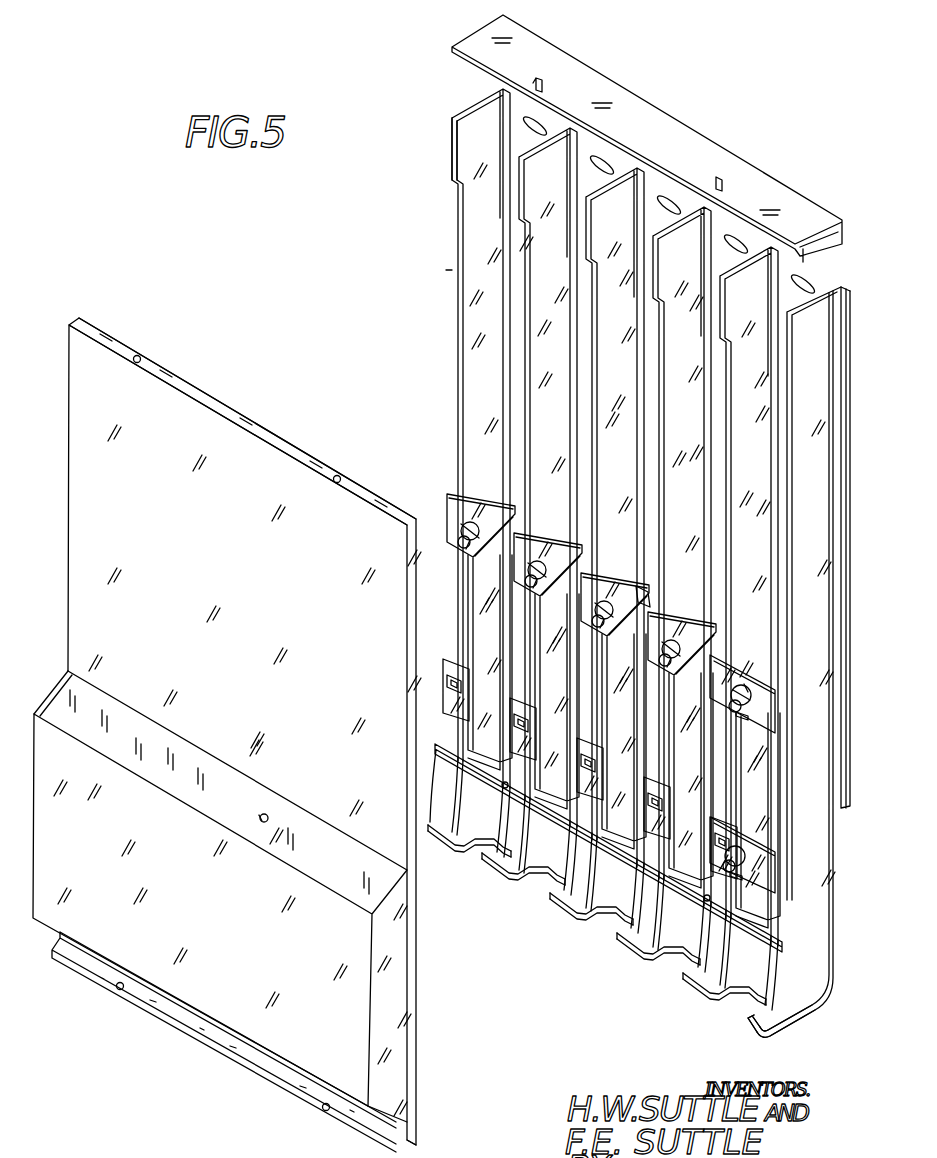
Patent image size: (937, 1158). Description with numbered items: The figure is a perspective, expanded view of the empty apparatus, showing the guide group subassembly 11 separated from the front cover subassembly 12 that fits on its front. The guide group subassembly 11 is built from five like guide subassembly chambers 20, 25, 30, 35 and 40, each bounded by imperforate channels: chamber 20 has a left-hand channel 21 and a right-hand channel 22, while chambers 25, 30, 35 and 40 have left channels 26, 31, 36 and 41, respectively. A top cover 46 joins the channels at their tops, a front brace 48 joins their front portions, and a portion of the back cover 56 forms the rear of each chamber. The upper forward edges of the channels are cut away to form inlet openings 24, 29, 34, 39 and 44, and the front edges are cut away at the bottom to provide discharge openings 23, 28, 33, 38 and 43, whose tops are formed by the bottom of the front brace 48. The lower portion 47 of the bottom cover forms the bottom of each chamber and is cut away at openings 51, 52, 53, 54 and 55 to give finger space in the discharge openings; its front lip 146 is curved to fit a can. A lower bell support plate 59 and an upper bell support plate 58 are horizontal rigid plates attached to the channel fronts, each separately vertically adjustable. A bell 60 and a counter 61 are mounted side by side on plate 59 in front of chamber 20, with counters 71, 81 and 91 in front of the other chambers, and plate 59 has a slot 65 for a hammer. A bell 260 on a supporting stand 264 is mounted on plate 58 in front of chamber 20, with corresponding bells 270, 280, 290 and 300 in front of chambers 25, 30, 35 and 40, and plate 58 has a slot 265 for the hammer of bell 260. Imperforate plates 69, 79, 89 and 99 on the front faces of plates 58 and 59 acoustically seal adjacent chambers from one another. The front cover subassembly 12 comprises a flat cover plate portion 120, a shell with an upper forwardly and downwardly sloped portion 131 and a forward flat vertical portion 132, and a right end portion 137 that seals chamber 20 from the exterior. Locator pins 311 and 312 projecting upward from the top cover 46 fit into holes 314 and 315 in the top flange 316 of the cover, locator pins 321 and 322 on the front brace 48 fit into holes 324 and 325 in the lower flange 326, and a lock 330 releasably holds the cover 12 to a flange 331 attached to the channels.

The guide group subassembly 11 is at (438, 264).
The front cover subassembly 12 is at (62, 458).
The guide subassembly chamber 20 is at (756, 493).
The imperforate left-hand channel 21 is at (764, 310).
The imperforate right-hand channel 22 is at (823, 359).
The discharge opening 23 is at (726, 988).
The inlet opening 24 is at (754, 393).
The guide subassembly chamber 25 is at (685, 471).
The imperforate left channel 26 is at (688, 281).
The discharge opening 28 is at (663, 944).
The inlet opening 29 is at (689, 322).
The guide subassembly chamber 30 is at (616, 429).
The imperforate left channel 31 is at (624, 233).
The discharge opening 33 is at (600, 902).
The inlet opening 34 is at (617, 288).
The guide subassembly chamber 35 is at (551, 402).
The imperforate left channel 36 is at (552, 195).
The discharge opening 38 is at (525, 882).
The inlet opening 39 is at (556, 240).
The guide subassembly chamber 40 is at (485, 368).
The imperforate left channel 41 is at (493, 165).
The discharge opening 43 is at (455, 838).
The inlet opening 44 is at (480, 194).
The top cover 46 is at (638, 116).
The lower portion of bottom cover 47 is at (779, 1031).
The front brace 48 is at (783, 947).
The opening 51 is at (746, 1002).
The opening 52 is at (683, 966).
The opening 53 is at (625, 922).
The opening 54 is at (559, 890).
The opening 55 is at (481, 850).
The back cover 56 is at (846, 484).
The upper bell support plate 58 is at (777, 688).
The lower bell support plate 59 is at (773, 858).
The bell 60 is at (736, 848).
The counter 61 is at (723, 832).
The slot 65 is at (744, 877).
The imperforate plate 69 is at (700, 755).
The counter 71 is at (648, 792).
The imperforate plate 79 is at (630, 718).
The counter 81 is at (580, 760).
The imperforate plate 89 is at (570, 699).
The counter 91 is at (512, 712).
The imperforate plate 99 is at (502, 648).
The upper guide subassembly chamber cover portion 120 is at (235, 550).
The upper forwardly and downwardly sloped portion 131 is at (66, 673).
The forward flat vertical portion 132 is at (234, 937).
The right end portion 137 is at (396, 1000).
The front lip 146 is at (751, 1020).
The bell 260 is at (731, 694).
The supporting stand 264 is at (745, 684).
The slot 265 is at (749, 716).
The bell 270 is at (665, 650).
The bell 280 is at (598, 610).
The bell 290 is at (528, 571).
The bell 300 is at (450, 497).
The locator pin 311 is at (536, 80).
The locator pin 312 is at (735, 184).
The hole 314 is at (141, 358).
The hole 315 is at (336, 475).
The top flange 316 is at (220, 410).
The locator pin 321 is at (502, 786).
The locator pin 322 is at (704, 900).
The hole 324 is at (117, 990).
The hole 325 is at (323, 1109).
The lower flange 326 is at (213, 1050).
The lock 330 is at (266, 812).
The flange 331 is at (638, 590).